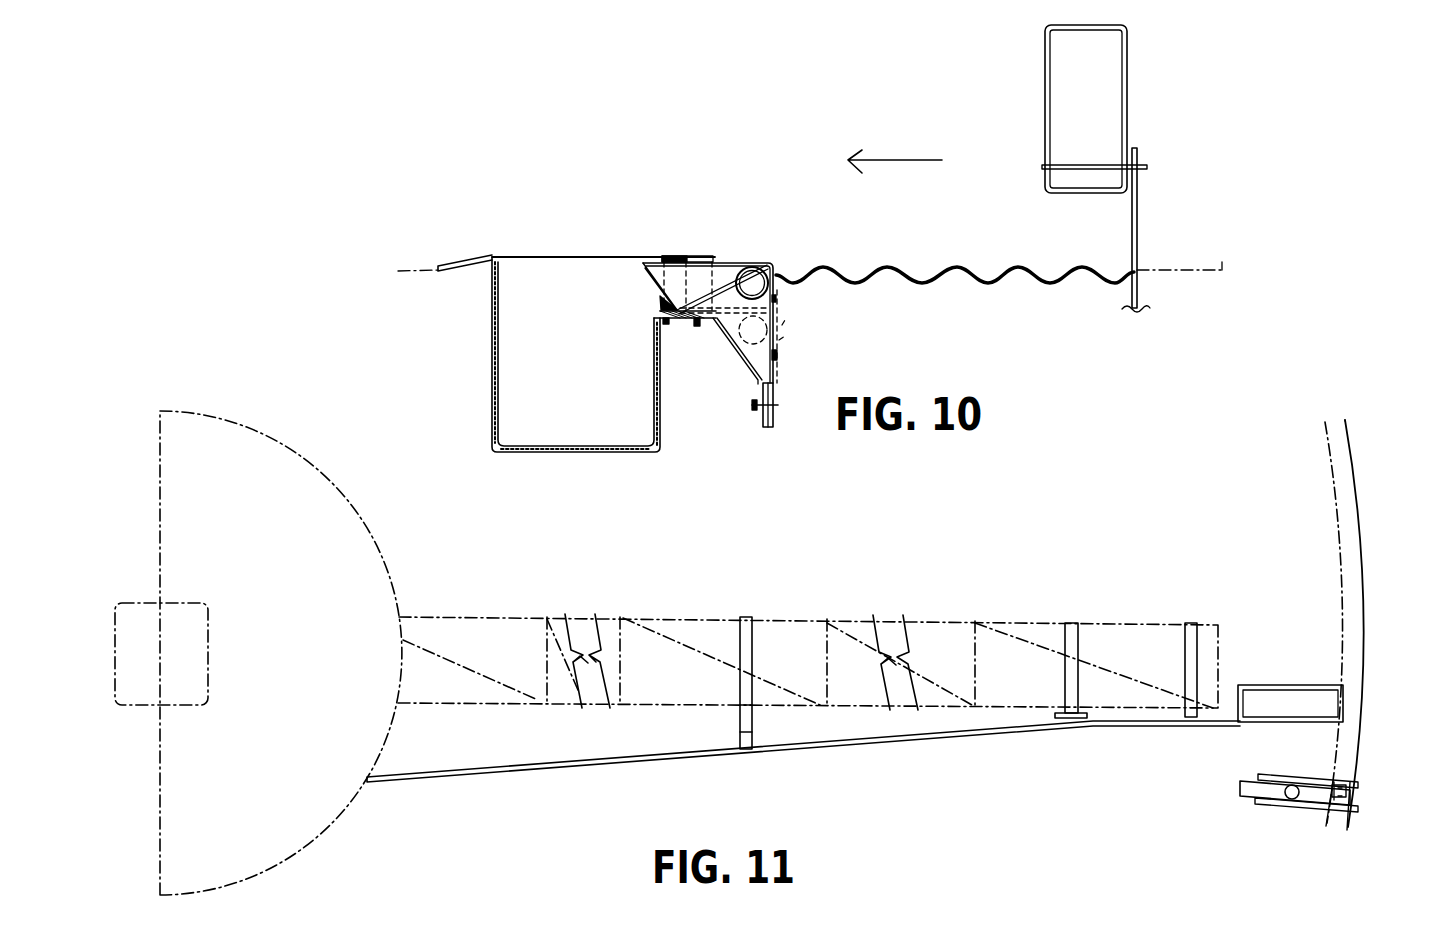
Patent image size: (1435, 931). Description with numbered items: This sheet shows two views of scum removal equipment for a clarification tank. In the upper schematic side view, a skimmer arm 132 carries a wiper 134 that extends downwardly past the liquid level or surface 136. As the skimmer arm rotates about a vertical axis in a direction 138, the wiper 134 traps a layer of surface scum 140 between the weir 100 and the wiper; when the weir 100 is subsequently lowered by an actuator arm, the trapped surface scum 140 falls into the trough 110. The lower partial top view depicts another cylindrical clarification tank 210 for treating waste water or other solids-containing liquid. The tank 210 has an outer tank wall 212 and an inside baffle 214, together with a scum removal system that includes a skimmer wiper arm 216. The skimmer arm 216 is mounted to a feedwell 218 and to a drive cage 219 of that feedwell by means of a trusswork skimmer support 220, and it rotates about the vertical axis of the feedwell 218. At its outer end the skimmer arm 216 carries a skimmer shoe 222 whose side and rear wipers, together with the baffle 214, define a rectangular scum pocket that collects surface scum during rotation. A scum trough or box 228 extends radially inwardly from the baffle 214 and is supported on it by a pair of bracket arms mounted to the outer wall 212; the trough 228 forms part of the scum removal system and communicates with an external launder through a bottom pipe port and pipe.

In FIG. 10, the weir 100 is at (755, 232).
In FIG. 10, the trough 110 is at (490, 330).
In FIG. 10, the skimmer arm 132 is at (1045, 42).
In FIG. 10, the wiper 134 is at (1132, 241).
In FIG. 10, the liquid level or surface 136 is at (1222, 262).
In FIG. 10, the direction 138 is at (898, 160).
In FIG. 10, the surface scum 140 is at (951, 266).
In FIG. 11, the cylindrical clarification tank 210 is at (1371, 446).
In FIG. 11, the outer tank wall 212 is at (1357, 509).
In FIG. 11, the inside baffle 214 is at (1345, 588).
In FIG. 11, the skimmer wiper arm 216 is at (880, 746).
In FIG. 11, the feedwell 218 is at (348, 497).
In FIG. 11, the drive cage 219 is at (208, 605).
In FIG. 11, the trusswork skimmer support 220 is at (1183, 648).
In FIG. 11, the skimmer shoe 222 is at (1300, 670).
In FIG. 11, the scum trough or box 228 is at (1248, 808).